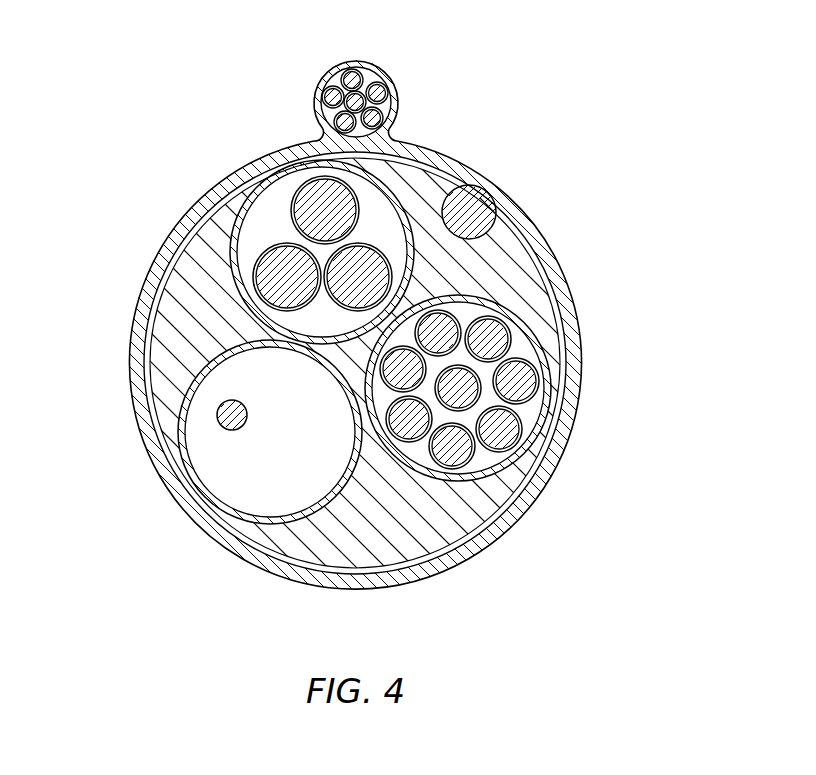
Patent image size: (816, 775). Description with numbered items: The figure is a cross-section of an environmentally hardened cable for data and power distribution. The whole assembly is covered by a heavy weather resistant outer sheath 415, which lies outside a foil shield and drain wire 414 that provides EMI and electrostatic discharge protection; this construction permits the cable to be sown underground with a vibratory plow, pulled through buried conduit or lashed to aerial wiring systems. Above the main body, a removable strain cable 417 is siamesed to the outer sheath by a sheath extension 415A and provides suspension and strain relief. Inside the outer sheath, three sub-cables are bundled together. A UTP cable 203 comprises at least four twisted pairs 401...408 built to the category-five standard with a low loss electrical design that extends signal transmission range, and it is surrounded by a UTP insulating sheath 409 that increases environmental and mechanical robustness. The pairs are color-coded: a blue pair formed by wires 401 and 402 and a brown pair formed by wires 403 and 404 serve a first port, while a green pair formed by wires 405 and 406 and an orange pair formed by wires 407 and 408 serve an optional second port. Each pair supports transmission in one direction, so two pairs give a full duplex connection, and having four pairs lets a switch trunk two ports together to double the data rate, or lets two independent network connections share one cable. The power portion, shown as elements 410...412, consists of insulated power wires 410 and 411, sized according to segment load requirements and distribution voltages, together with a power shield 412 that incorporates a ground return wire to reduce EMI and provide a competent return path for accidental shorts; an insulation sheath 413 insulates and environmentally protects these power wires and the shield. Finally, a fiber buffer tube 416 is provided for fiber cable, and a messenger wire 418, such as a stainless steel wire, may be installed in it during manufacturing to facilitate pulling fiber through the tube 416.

The UTP cable 203 is at (345, 345).
The twisted pairs 401...408 is at (551, 389).
The wire 401 is at (518, 370).
The wire 402 is at (499, 429).
The wire 403 is at (452, 446).
The wire 404 is at (409, 419).
The wire 405 is at (403, 369).
The wire 406 is at (438, 333).
The wire 407 is at (488, 339).
The wire 408 is at (458, 388).
The UTP insulating sheath 409 is at (394, 347).
The power wires and power shield 410...412 is at (250, 214).
The insulated power wire 410 is at (307, 170).
The insulated power wire 411 is at (287, 277).
The power shield 412 is at (358, 277).
The insulation sheath 413 is at (364, 335).
The foil shield and drain wire 414 is at (473, 206).
The outer sheath 415 is at (132, 318).
The sheath extension 415A is at (408, 268).
The fiber buffer tube 416 is at (315, 384).
The strain cable 417 is at (347, 62).
The messenger wire 418 is at (232, 430).